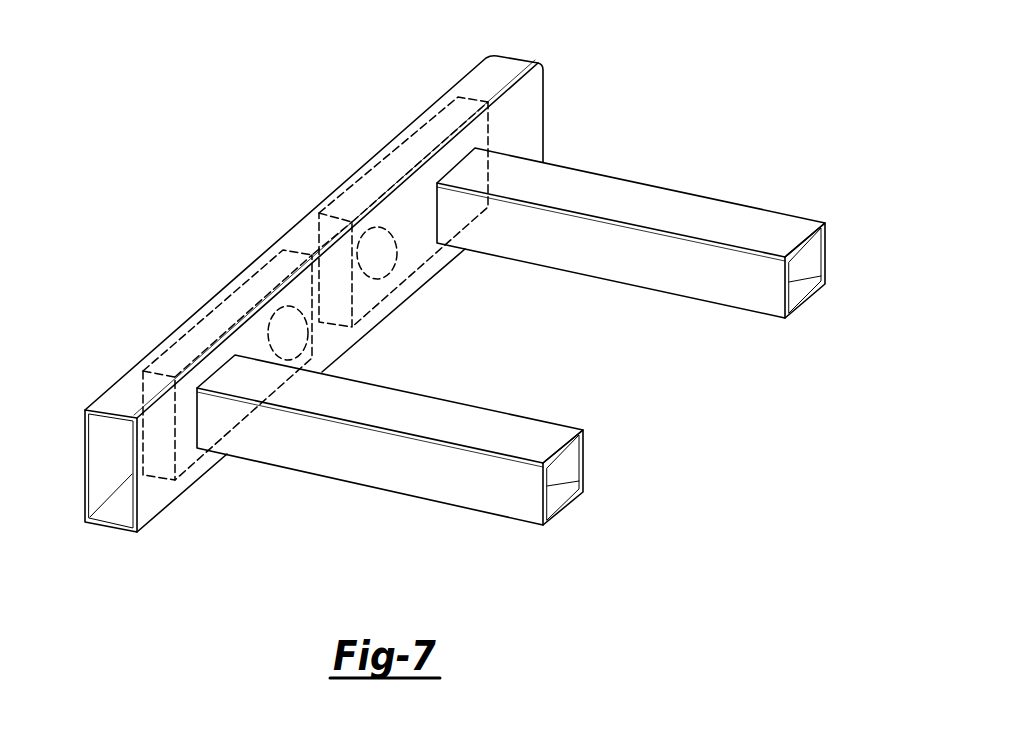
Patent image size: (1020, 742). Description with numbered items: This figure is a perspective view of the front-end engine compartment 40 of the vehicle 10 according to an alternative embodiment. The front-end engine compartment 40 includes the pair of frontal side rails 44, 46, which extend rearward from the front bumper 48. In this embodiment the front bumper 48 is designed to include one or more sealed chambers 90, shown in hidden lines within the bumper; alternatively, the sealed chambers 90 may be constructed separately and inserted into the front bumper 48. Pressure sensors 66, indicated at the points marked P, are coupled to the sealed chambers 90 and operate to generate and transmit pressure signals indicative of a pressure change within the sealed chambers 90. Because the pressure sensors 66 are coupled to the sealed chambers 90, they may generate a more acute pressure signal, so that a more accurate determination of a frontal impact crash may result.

The frame assembly 10 is at (683, 58).
The front-end engine compartment 40 is at (538, 56).
The frontal side rail 44 is at (525, 417).
The frontal side rail 46 is at (687, 193).
The front bumper 48 is at (137, 366).
The pressure sensor 66 is at (397, 253).
The sealed chamber 90 is at (366, 166).